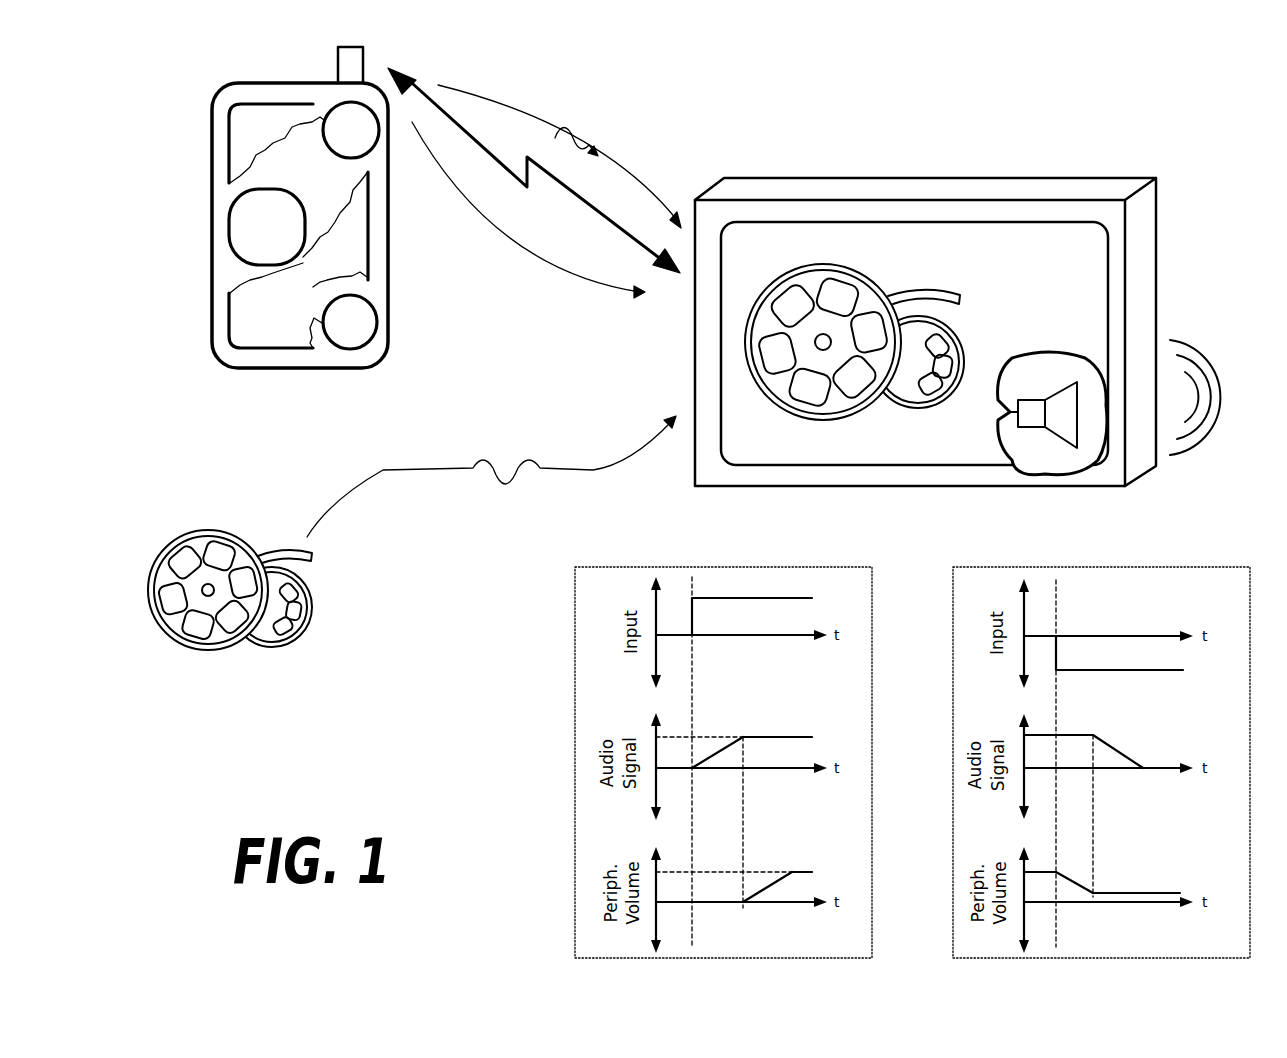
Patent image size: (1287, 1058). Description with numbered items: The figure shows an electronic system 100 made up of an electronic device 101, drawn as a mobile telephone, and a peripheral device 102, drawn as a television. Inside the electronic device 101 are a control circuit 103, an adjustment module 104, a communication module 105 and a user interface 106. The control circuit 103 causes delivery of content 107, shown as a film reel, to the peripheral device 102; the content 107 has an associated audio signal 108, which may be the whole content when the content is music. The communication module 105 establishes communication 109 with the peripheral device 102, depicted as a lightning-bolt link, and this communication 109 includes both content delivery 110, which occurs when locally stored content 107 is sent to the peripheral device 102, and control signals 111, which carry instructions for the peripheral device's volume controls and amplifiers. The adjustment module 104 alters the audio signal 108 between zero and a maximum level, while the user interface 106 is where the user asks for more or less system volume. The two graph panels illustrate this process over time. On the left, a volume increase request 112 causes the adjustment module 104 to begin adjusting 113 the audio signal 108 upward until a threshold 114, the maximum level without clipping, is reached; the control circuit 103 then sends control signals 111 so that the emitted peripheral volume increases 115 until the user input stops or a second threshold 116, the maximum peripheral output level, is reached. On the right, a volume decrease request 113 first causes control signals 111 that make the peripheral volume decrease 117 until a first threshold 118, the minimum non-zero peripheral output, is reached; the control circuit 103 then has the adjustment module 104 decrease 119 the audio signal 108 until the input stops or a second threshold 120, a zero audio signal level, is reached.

The system 100 is at (1188, 124).
The electronic device 101 is at (211, 153).
The peripheral device 102 is at (1042, 189).
The control circuit 103 is at (240, 233).
The adjustment module 104 is at (370, 322).
The communication module 105 is at (324, 118).
The user interface 106 is at (272, 333).
The content 107 is at (230, 625).
The audio signal 108 is at (580, 158).
The communication 109 is at (467, 133).
The content delivery 110 is at (602, 105).
The control signals 111 is at (492, 270).
The volume increase request 112 is at (713, 595).
The volume decrease request 113 is at (707, 760).
The threshold 114 is at (745, 735).
The increase 115 is at (757, 893).
The second threshold 116 is at (790, 872).
The decrease 117 is at (1077, 885).
The first threshold 118 is at (1095, 892).
The decrease 119 is at (1118, 747).
The second threshold 120 is at (1145, 767).